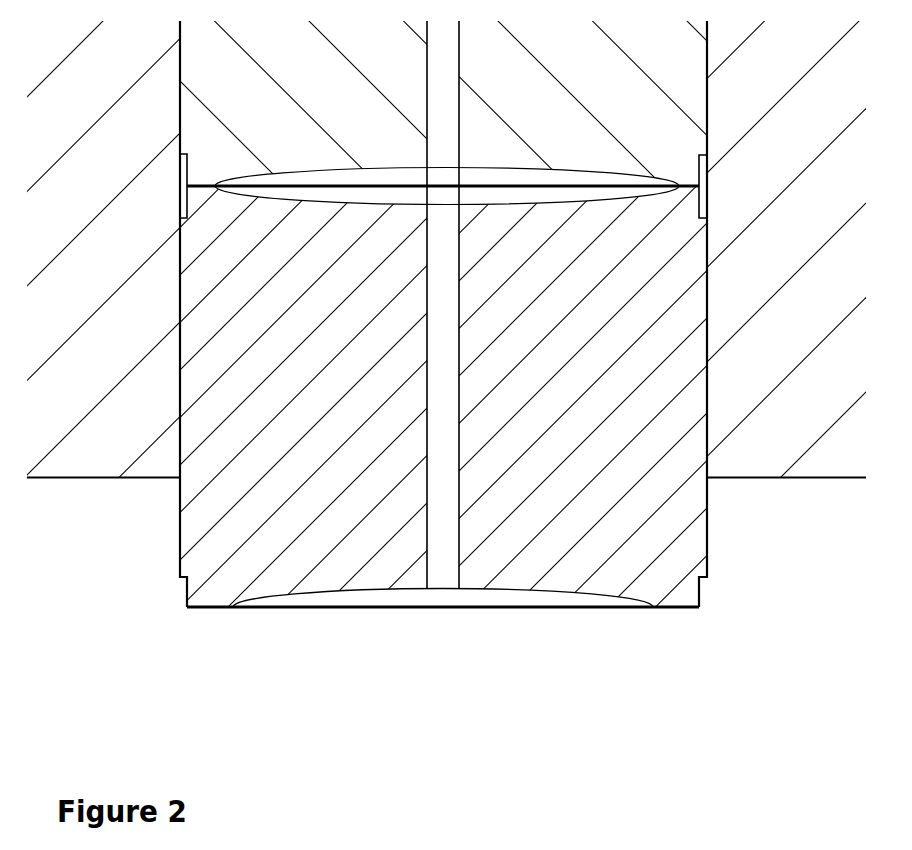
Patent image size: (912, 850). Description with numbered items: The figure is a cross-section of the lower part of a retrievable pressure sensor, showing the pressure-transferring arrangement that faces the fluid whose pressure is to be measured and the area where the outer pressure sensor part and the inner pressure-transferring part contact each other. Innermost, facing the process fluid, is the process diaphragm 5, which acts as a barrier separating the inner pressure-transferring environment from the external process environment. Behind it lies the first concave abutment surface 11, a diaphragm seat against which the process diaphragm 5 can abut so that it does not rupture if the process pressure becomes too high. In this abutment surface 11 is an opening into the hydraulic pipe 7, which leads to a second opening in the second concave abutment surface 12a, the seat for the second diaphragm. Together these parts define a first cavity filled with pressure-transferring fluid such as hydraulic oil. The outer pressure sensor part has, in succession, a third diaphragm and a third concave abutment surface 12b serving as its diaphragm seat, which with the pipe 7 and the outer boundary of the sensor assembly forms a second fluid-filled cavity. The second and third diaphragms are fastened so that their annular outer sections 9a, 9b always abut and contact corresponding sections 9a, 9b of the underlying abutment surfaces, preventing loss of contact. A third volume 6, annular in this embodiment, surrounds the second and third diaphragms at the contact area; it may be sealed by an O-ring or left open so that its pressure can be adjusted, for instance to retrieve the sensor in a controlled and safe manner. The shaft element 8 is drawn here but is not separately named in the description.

The process diaphragm 5 is at (350, 608).
The third volume 6 is at (178, 190).
The hydraulic pipe 7 is at (445, 385).
The shaft 8 is at (459, 166).
The outer section of second diaphragm 9a is at (683, 205).
The outer section of third diaphragm 9b is at (683, 205).
The first concave abutment surface 11 is at (494, 588).
The second concave abutment surface 12a is at (533, 207).
The third concave abutment surface 12b is at (540, 172).